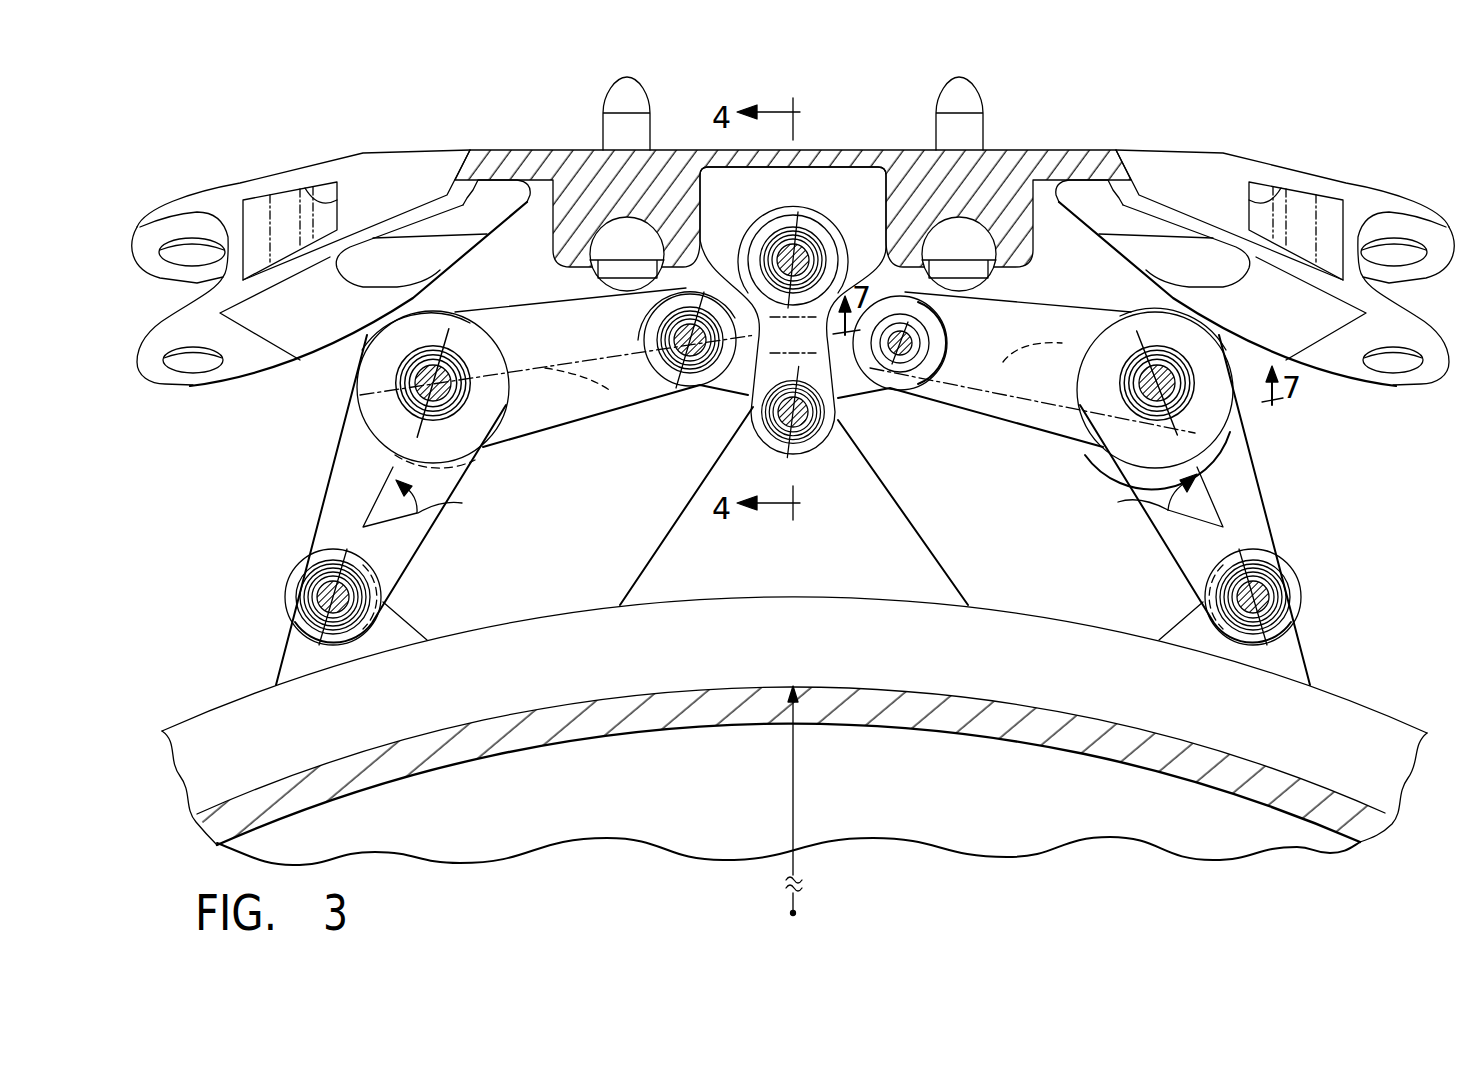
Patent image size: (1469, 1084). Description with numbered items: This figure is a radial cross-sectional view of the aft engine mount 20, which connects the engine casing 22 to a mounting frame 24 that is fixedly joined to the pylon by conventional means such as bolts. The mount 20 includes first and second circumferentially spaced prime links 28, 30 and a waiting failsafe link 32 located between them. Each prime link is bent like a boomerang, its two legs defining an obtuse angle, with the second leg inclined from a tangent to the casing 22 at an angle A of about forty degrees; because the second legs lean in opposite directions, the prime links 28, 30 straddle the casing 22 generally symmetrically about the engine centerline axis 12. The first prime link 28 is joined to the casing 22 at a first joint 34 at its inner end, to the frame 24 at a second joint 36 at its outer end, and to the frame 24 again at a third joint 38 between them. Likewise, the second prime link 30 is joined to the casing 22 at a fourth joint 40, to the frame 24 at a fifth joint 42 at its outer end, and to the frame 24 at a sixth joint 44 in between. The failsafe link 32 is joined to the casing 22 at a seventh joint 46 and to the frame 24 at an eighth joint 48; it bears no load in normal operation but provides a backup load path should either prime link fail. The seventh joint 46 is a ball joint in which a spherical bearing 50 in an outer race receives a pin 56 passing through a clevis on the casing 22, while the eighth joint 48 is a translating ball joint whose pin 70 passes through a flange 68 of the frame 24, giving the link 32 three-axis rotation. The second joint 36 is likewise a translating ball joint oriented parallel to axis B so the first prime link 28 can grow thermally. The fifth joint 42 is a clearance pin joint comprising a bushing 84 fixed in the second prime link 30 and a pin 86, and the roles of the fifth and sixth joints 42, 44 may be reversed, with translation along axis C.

The engine centerline axis 12 is at (795, 913).
The aft engine mount 20 is at (793, 231).
The engine casing 22 is at (935, 715).
The mounting frame 24 is at (1060, 160).
The first prime link 28 is at (405, 540).
The second prime link 30 is at (1185, 540).
The waiting failsafe link 32 is at (806, 351).
The first joint 34 is at (288, 590).
The second joint 36 is at (696, 392).
The third joint 38 is at (385, 413).
The fourth joint 40 is at (1306, 572).
The fifth joint 42 is at (943, 327).
The sixth joint 44 is at (1275, 327).
The seventh joint 46 is at (840, 418).
The eighth joint 48 is at (835, 240).
The spherical bearing 50 is at (397, 370).
The pin 56 is at (472, 405).
The second flange 68 is at (1093, 275).
The pin 70 is at (791, 250).
The bushing 84 is at (880, 313).
The pin 86 is at (921, 360).